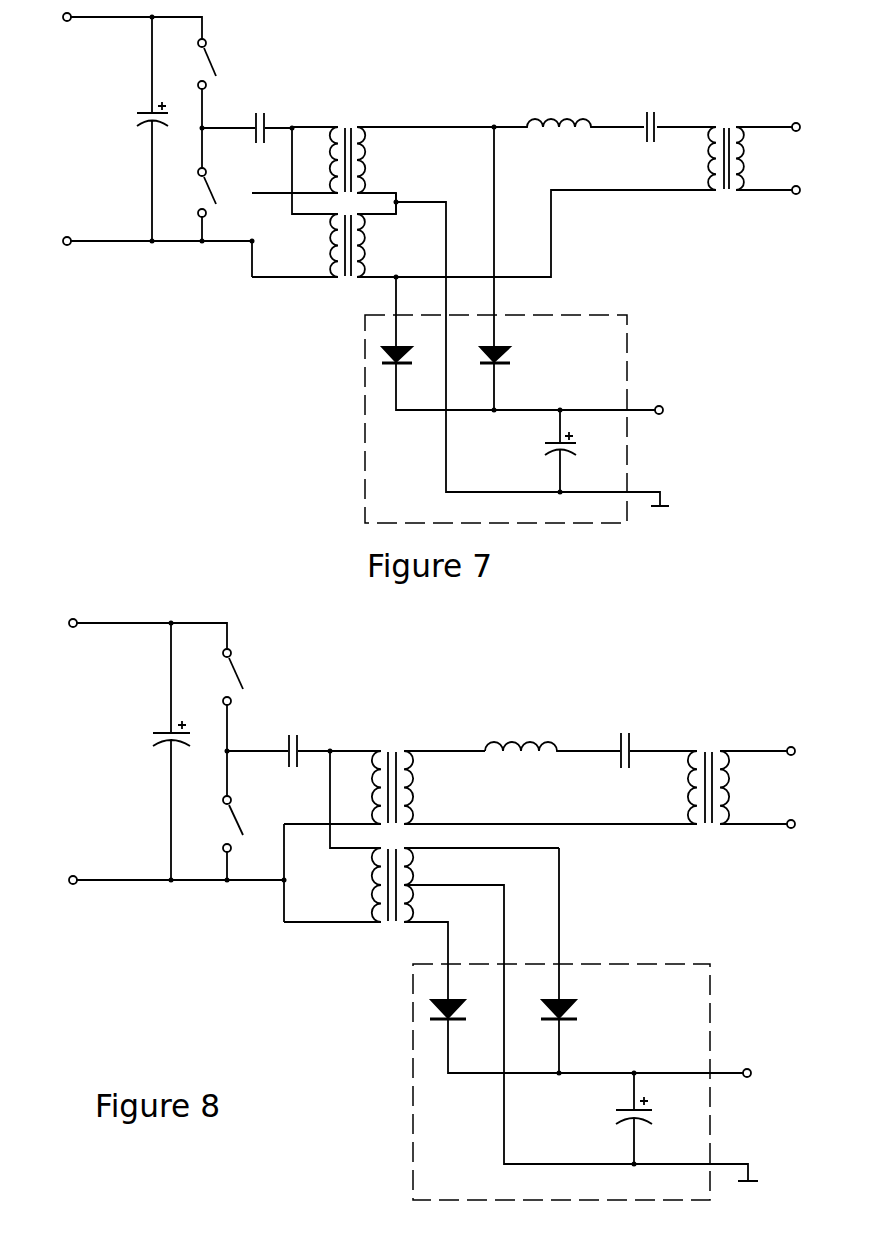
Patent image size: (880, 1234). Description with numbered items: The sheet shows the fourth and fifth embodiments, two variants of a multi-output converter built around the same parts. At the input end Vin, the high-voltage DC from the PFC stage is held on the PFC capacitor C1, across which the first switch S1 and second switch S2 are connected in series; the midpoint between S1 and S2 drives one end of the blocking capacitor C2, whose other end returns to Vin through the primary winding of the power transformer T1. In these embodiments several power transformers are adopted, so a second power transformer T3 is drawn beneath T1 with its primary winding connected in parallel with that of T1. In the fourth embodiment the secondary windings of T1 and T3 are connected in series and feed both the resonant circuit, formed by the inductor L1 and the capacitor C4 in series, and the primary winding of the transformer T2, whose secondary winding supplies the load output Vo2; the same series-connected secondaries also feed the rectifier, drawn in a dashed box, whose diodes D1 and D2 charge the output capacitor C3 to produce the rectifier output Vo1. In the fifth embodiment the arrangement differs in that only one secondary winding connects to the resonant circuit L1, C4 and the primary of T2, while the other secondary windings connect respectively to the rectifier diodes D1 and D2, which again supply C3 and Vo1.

In FIG. 7, the input end Vin is at (50, 127).
In FIG. 8, the input end Vin is at (54, 750).
In FIG. 7, the PFC capacitor C1 is at (137, 129).
In FIG. 8, the PFC capacitor C1 is at (153, 751).
In FIG. 7, the first switch S1 is at (216, 64).
In FIG. 8, the first switch S1 is at (242, 677).
In FIG. 7, the second switch S2 is at (216, 192).
In FIG. 8, the second switch S2 is at (242, 824).
In FIG. 7, the blocking capacitor C2 is at (260, 120).
In FIG. 8, the blocking capacitor C2 is at (294, 741).
In FIG. 7, the power transformer T1 is at (373, 156).
In FIG. 8, the power transformer T1 is at (490, 778).
In FIG. 7, the power transformer T3 is at (401, 249).
In FIG. 8, the power transformer T3 is at (421, 924).
In FIG. 7, the resonant inductor L1 is at (569, 115).
In FIG. 8, the resonant inductor L1 is at (552, 737).
In FIG. 7, the resonant capacitor C4 is at (650, 118).
In FIG. 8, the resonant capacitor C4 is at (624, 741).
In FIG. 7, the transformer T2 is at (671, 151).
In FIG. 8, the transformer T2 is at (737, 777).
In FIG. 7, the load output Vo2 is at (812, 156).
In FIG. 8, the load output Vo2 is at (807, 783).
In FIG. 7, the rectifier diode D1 is at (408, 345).
In FIG. 8, the rectifier diode D1 is at (459, 999).
In FIG. 7, the rectifier diode D2 is at (506, 345).
In FIG. 8, the rectifier diode D2 is at (570, 999).
In FIG. 7, the rectifier output capacitor C3 is at (572, 439).
In FIG. 8, the rectifier output capacitor C3 is at (646, 1106).
In FIG. 7, the rectifier output Vo1 is at (677, 411).
In FIG. 8, the rectifier output Vo1 is at (765, 1074).